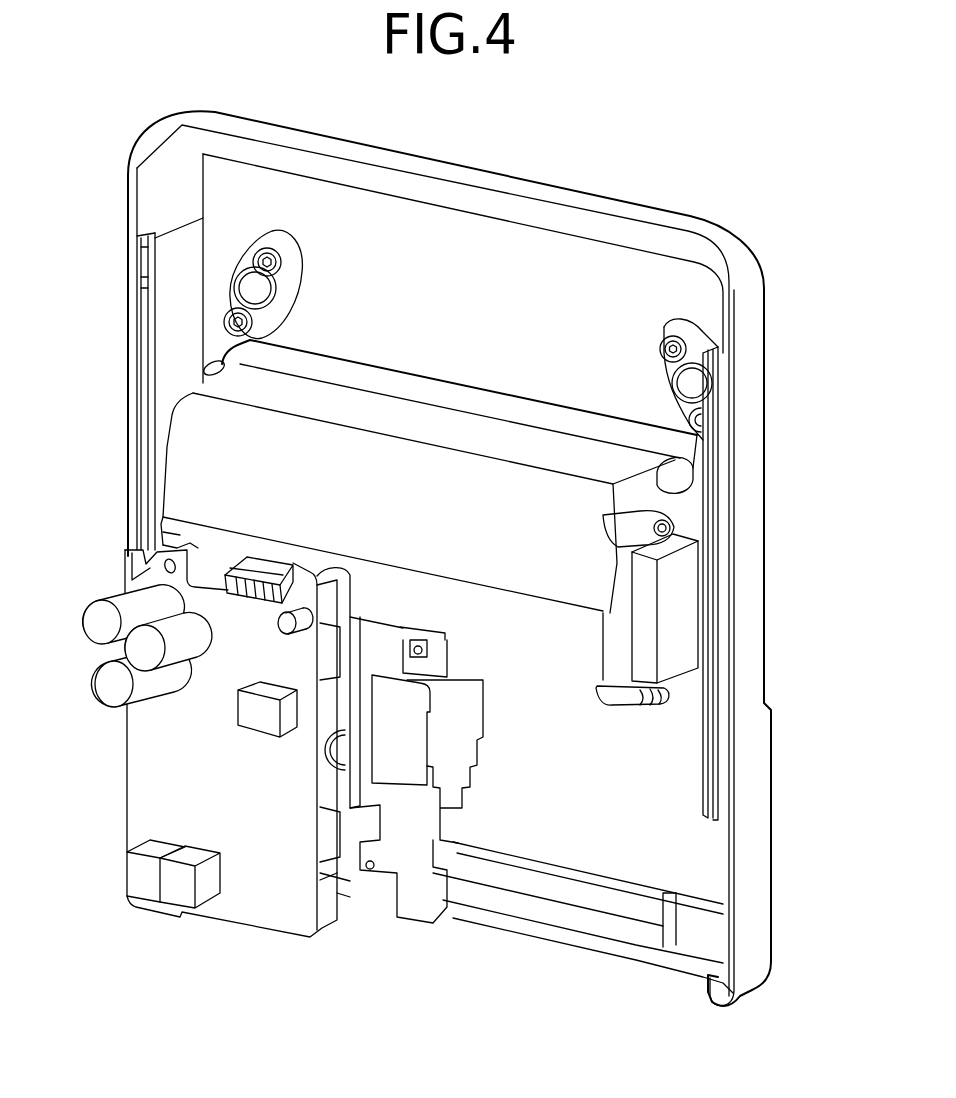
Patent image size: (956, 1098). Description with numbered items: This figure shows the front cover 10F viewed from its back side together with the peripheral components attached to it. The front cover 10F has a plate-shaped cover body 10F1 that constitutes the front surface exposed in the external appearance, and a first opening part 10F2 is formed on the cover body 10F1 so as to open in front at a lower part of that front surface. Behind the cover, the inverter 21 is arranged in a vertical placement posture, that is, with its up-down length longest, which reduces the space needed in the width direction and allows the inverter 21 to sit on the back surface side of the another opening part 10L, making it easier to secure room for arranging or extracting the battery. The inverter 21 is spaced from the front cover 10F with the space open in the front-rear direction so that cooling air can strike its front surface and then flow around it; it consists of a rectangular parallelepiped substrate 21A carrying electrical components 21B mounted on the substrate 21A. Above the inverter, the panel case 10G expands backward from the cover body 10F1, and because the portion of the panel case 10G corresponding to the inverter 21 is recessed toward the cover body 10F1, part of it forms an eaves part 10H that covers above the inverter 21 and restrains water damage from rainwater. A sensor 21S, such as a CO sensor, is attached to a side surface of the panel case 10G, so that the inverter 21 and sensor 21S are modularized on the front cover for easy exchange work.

The front cover 10F is at (147, 141).
The cover body 10F1 is at (764, 342).
The first opening part 10F2 is at (703, 770).
The panel case 10G is at (192, 458).
The eaves part 10H is at (213, 533).
The another opening part 10L is at (723, 867).
The inverter 21 is at (176, 743).
The substrate 21A is at (165, 813).
The electrical components 21B is at (100, 673).
The sensor 21S is at (683, 613).